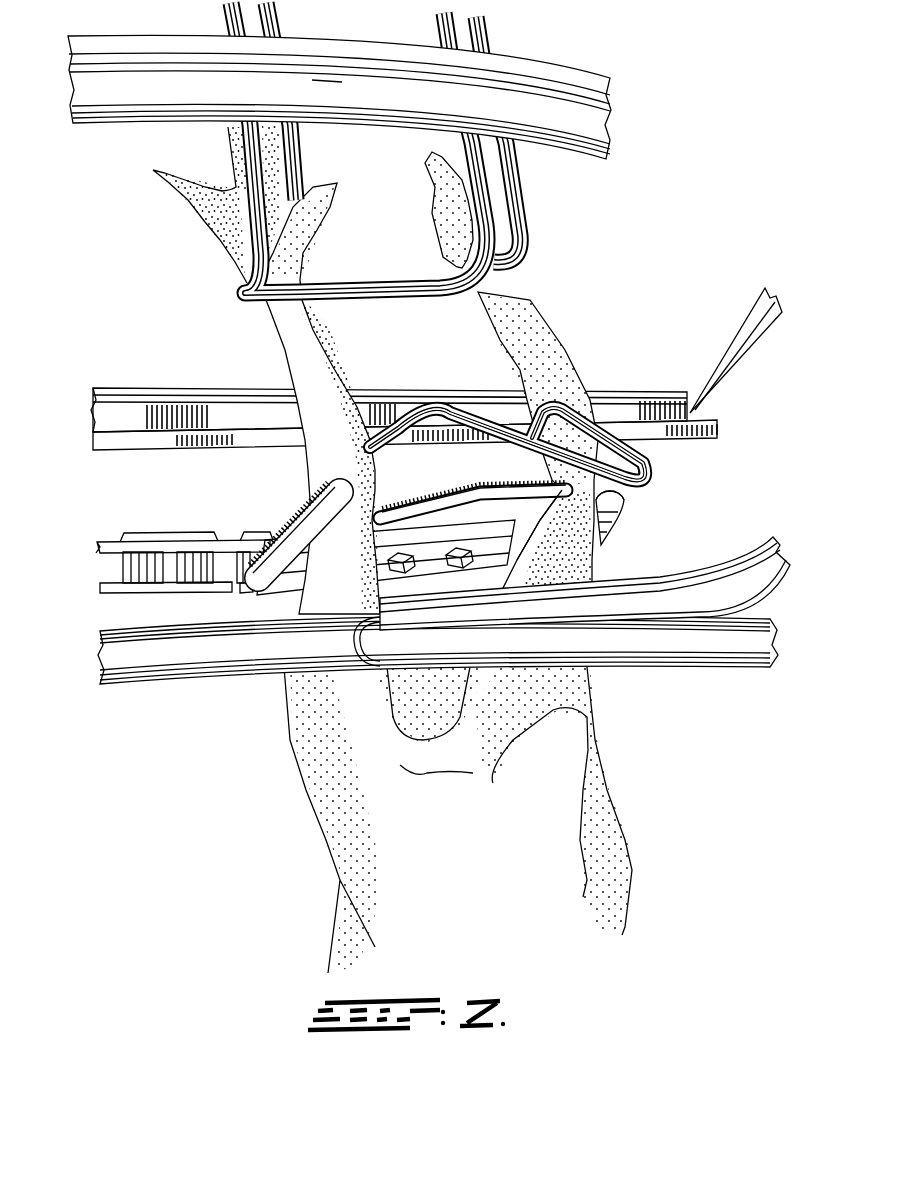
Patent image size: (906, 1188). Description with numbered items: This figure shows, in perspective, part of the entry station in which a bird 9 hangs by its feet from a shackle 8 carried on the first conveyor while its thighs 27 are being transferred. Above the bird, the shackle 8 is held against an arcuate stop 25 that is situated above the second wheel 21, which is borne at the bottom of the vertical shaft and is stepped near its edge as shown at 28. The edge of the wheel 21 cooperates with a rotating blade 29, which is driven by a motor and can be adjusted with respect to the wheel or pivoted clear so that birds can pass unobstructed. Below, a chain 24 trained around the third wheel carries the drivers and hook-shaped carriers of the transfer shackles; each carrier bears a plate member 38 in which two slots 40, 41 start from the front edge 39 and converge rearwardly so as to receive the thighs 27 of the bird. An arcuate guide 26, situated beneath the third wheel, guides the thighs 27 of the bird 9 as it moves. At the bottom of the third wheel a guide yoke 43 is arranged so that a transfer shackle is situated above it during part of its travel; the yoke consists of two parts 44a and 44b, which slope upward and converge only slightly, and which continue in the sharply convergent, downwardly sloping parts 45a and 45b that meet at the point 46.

The arcuate stop 25 is at (557, 82).
The shackle 8 is at (521, 197).
The second wheel 21 is at (214, 386).
The upwardly sloping part of guide yoke 44a is at (398, 422).
The guide yoke 43 is at (477, 413).
The upwardly sloping part of guide yoke 44b is at (547, 417).
The rotating blade 29 is at (742, 351).
The step of wheel 28 is at (697, 417).
The downwardly sloping part of guide yoke 45b is at (642, 443).
The point of guide yoke 46 is at (655, 477).
The front edge of plate 39 is at (620, 499).
The plate member 38 is at (617, 531).
The slot 40 is at (566, 530).
The slot 41 is at (380, 514).
The downwardly sloping part of guide yoke 45a is at (493, 440).
The chain 24 is at (232, 540).
The thigh 27 is at (317, 600).
The arcuate guide 26 is at (243, 655).
The bird 9 is at (613, 883).